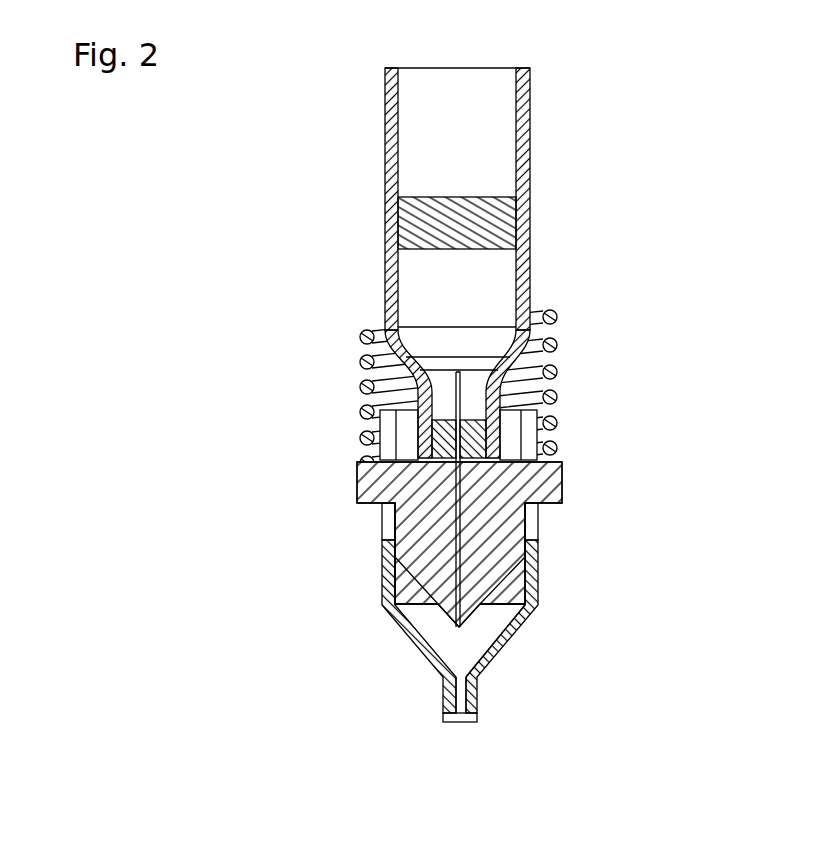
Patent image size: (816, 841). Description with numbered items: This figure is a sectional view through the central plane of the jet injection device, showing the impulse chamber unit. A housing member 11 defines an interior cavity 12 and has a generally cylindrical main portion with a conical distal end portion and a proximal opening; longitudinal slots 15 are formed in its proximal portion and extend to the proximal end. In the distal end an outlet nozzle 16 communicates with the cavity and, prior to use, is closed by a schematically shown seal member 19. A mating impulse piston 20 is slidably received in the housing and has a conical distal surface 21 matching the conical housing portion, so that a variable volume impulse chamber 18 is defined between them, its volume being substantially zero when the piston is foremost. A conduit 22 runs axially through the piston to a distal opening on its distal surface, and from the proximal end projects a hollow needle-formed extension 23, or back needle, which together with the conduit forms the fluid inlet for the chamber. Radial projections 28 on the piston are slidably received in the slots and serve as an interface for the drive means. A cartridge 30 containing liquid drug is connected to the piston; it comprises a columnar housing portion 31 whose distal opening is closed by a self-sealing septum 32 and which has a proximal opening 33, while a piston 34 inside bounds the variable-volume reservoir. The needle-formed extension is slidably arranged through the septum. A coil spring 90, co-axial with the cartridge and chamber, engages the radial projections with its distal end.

The housing member 11 is at (523, 637).
The interior cavity 12 is at (492, 632).
The longitudinal slots 15 is at (528, 519).
The outlet nozzle 16 is at (460, 702).
The impulse chamber 18 is at (432, 623).
The seal member 19 is at (475, 715).
The impulse piston 20 is at (512, 550).
The conical distal surface 21 is at (510, 578).
The conduit 22 is at (455, 568).
The needle-formed extension 23 is at (417, 390).
The radial projections 28 is at (553, 481).
The cartridge 30 is at (508, 176).
The columnar housing portion 31 is at (521, 268).
The septum 32 is at (498, 438).
The proximal opening 33 is at (492, 77).
The piston 34 is at (498, 223).
The coil spring 90 is at (557, 350).